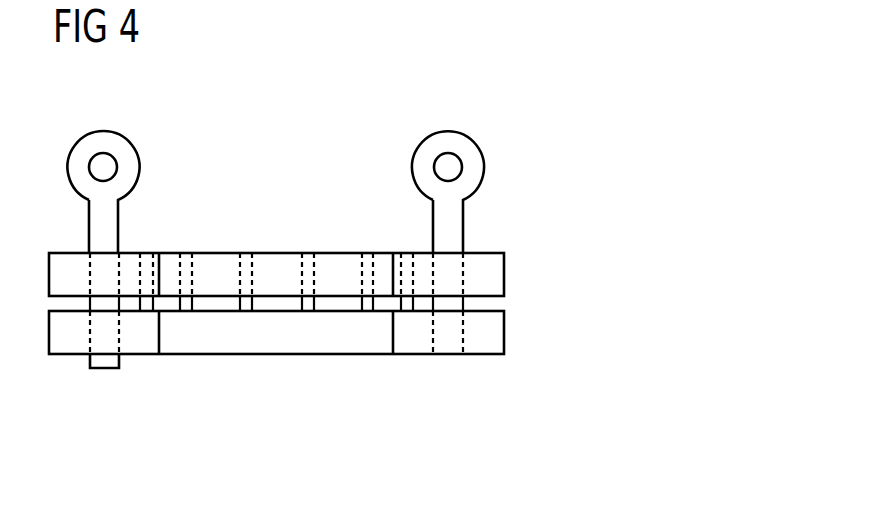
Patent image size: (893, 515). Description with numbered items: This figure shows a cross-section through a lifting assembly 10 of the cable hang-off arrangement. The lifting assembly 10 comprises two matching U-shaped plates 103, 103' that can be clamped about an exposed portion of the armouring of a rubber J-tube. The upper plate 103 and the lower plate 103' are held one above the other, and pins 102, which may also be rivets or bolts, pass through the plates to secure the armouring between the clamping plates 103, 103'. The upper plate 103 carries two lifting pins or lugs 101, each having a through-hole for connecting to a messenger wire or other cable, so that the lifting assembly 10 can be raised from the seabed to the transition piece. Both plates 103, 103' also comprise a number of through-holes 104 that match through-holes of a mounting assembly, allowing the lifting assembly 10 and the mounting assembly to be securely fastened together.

The lifting assembly 10 is at (521, 106).
The lifting lug 101 is at (103, 137).
The pin 102 is at (308, 303).
The upper plate 103 is at (310, 276).
The lower plate 103' is at (312, 335).
The through-hole 104 is at (103, 364).